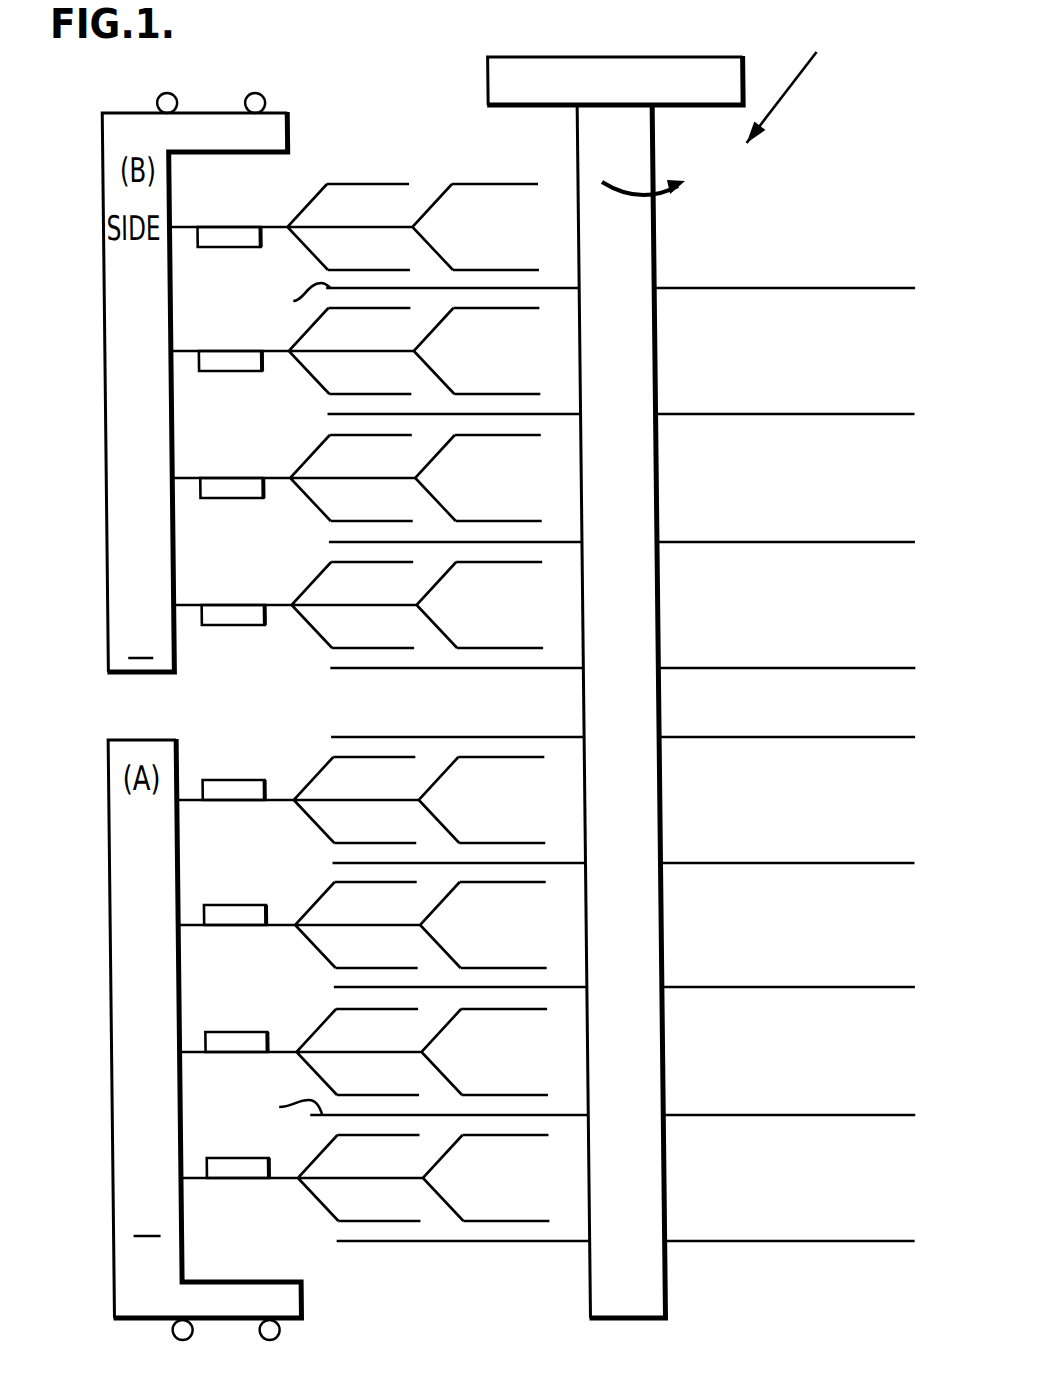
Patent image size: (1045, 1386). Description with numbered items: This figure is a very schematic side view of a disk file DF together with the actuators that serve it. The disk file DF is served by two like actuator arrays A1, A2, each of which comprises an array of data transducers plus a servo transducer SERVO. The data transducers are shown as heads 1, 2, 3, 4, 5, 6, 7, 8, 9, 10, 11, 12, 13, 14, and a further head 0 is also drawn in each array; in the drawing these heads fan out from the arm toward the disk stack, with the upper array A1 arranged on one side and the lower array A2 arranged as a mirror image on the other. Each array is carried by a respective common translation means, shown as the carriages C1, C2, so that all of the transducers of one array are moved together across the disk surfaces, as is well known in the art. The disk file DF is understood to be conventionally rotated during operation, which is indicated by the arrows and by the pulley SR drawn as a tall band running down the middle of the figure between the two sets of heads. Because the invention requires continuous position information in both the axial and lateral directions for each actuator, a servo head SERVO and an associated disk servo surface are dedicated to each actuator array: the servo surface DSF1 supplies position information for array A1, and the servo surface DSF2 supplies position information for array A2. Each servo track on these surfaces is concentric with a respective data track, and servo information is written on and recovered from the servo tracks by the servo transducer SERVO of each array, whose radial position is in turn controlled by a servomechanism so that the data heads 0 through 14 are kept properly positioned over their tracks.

The head 0 is at (501, 704).
The data transducer 1 is at (373, 704).
The data transducer 2 is at (500, 702).
The data transducer 3 is at (373, 702).
The data transducer 4 is at (500, 703).
The data transducer 5 is at (373, 703).
The data transducer 6 is at (501, 701).
The data transducer 7 is at (373, 701).
The data transducer 8 is at (501, 703).
The data transducer 9 is at (373, 703).
The data transducer 10 is at (500, 701).
The data transducer 11 is at (373, 701).
The data transducer 12 is at (501, 704).
The data transducer 13 is at (373, 702).
The data transducer 14 is at (500, 702).
The servo transducer SERVO is at (373, 704).
The actuator array A1 is at (223, 364).
The actuator array A2 is at (247, 1039).
The carriage C1 is at (142, 637).
The carriage C2 is at (148, 1210).
The disk file DF is at (801, 76).
The pulley SR is at (552, 96).
The servo surface DSF1 is at (285, 308).
The servo surface DSF2 is at (265, 1112).